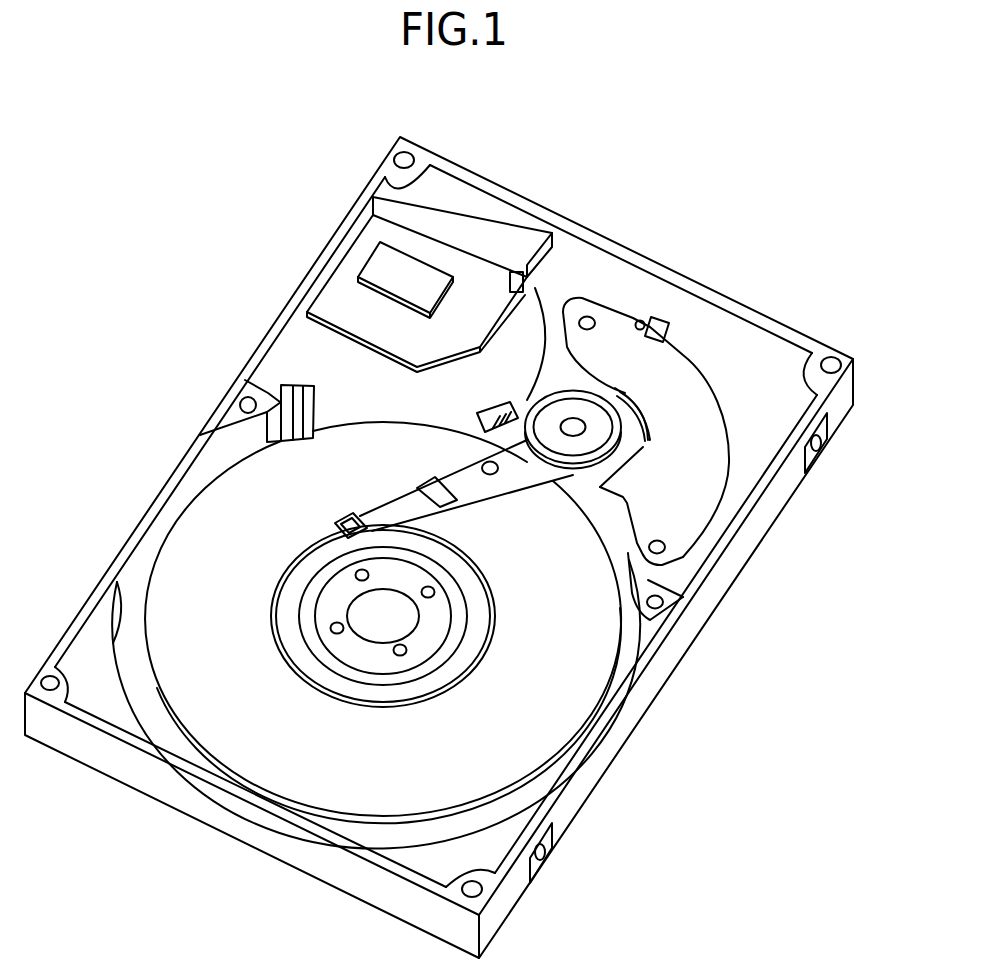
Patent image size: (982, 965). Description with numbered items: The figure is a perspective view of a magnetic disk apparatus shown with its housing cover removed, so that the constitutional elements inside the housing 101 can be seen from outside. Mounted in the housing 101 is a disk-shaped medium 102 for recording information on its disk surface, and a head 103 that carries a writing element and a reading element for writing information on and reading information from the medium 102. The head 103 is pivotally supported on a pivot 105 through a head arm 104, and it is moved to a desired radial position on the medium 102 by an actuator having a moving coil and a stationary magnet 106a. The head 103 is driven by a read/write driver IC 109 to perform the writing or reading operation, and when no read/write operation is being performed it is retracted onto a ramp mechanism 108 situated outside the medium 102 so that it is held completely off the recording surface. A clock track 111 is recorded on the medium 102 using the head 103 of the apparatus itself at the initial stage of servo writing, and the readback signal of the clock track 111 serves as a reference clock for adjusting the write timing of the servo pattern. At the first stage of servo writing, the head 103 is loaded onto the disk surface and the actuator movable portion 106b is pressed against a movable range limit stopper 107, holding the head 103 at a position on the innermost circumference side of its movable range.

The housing 101 is at (683, 636).
The disk-shaped medium 102 is at (543, 683).
The head 103 is at (352, 512).
The head arm 104 is at (476, 465).
The pivot 105 is at (573, 427).
The stationary magnet 106a is at (658, 508).
The actuator movable portion 106b is at (633, 447).
The movable range limit stopper 107 is at (646, 320).
The ramp mechanism 108 is at (306, 404).
The read/write driver IC 109 is at (383, 272).
The clock track 111 is at (446, 688).